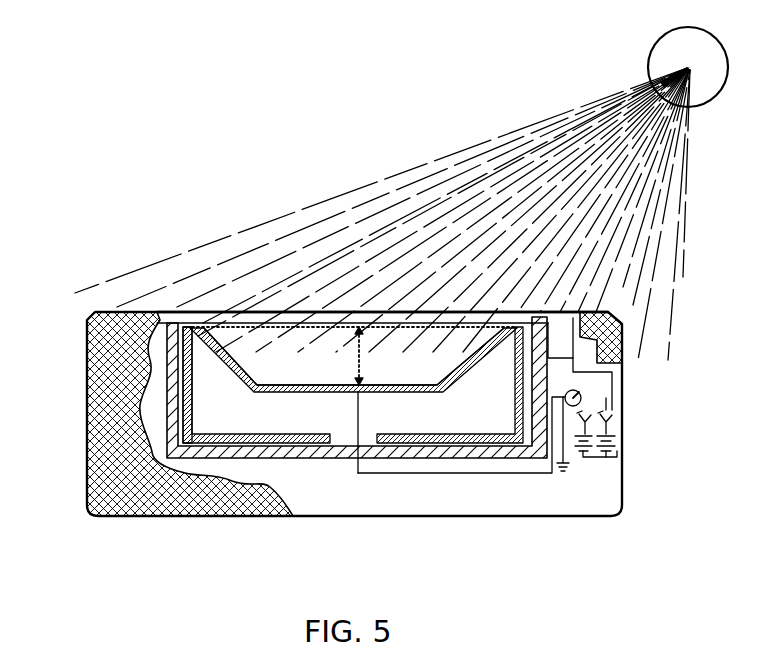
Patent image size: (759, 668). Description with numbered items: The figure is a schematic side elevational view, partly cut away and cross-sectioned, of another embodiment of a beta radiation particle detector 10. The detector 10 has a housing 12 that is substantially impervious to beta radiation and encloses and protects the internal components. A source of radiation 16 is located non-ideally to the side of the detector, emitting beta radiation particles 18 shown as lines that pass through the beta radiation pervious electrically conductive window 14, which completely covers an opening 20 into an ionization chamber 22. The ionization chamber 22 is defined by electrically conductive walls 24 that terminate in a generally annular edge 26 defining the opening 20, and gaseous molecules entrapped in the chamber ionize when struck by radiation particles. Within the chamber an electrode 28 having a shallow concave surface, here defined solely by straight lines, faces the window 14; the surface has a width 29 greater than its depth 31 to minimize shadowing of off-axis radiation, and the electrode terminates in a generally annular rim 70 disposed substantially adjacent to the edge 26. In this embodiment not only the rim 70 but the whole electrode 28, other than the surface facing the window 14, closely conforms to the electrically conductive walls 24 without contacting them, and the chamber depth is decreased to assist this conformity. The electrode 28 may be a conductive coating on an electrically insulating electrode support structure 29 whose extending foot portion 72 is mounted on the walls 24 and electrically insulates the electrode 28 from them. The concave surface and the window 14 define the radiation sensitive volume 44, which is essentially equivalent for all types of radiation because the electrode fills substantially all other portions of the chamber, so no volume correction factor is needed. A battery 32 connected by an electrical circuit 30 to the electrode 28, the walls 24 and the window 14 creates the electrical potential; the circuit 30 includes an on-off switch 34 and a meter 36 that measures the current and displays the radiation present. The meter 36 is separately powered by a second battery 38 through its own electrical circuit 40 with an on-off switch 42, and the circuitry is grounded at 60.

The beta radiation particle detector 10 is at (78, 344).
The housing 12 is at (87, 417).
The beta radiation pervious electrically conductive window 14 is at (268, 311).
The source of radiation 16 is at (667, 52).
The beta radiation particles 18 is at (393, 173).
The opening 20 is at (332, 322).
The ionization chamber 22 is at (307, 313).
The electrically conductive walls 24 is at (518, 458).
The generally annular edge 26 is at (187, 322).
The electrode 28 is at (373, 385).
The electrode support structure 29 is at (248, 330).
The electrical circuit 30 is at (565, 320).
The depth 31 is at (364, 363).
The battery 32 is at (618, 453).
The on-off switch 34 is at (617, 424).
The meter 36 is at (583, 398).
The second battery 38 is at (603, 458).
The electrical circuit 40 is at (589, 457).
The on-off switch 42 is at (589, 410).
The radiation sensitive volume 44 is at (337, 372).
The ground 60 is at (558, 475).
The generally annular rim 70 is at (521, 321).
The extending foot portion 72 is at (342, 455).